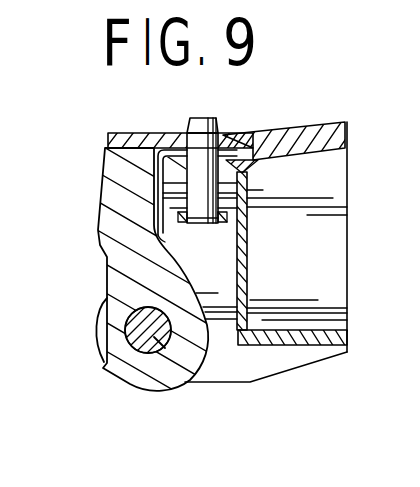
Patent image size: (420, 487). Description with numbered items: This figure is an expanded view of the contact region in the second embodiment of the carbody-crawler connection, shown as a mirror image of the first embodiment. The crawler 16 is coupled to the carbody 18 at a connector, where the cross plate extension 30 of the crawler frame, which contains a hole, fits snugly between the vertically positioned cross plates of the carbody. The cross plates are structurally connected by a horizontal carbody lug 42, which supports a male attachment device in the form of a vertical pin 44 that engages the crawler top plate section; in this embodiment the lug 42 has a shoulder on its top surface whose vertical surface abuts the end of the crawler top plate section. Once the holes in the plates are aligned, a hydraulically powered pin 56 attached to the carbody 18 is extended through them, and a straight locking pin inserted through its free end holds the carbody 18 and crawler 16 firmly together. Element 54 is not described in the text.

The crawler 16 is at (100, 245).
The carbody 18 is at (316, 271).
The cross plate extension 30 is at (136, 373).
The horizontal carbody lug 42 is at (230, 133).
The vertical pin 44 is at (184, 128).
The tapered flange 54 is at (292, 135).
The hydraulically powered pin 56 is at (165, 352).